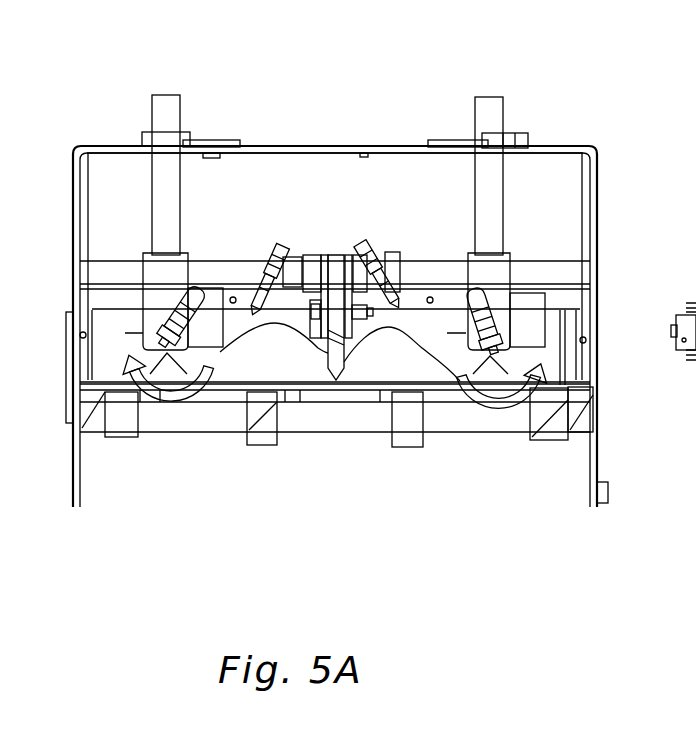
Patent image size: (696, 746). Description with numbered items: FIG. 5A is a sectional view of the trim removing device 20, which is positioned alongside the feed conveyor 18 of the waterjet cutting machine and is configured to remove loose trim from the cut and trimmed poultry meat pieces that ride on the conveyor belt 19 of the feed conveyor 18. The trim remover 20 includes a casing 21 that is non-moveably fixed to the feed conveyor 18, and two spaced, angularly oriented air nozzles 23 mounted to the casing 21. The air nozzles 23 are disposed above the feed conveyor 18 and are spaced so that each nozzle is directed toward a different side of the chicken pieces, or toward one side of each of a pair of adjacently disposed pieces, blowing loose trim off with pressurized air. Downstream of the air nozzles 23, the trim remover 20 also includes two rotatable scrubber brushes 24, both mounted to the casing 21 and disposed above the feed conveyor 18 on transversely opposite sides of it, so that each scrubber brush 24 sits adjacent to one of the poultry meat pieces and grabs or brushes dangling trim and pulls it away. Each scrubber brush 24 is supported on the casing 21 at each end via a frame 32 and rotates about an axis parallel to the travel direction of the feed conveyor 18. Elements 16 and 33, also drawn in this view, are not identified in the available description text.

The scoop guard 16 is at (302, 362).
The feed conveyor 18 is at (341, 408).
The conveyor belt 19 is at (228, 383).
The trim removing device 20 is at (375, 143).
The casing 21 is at (553, 146).
The air nozzle 23 is at (266, 278).
The scrubber brush 24 is at (180, 312).
The frame 32 is at (157, 267).
The nozzle detail 33 is at (695, 382).